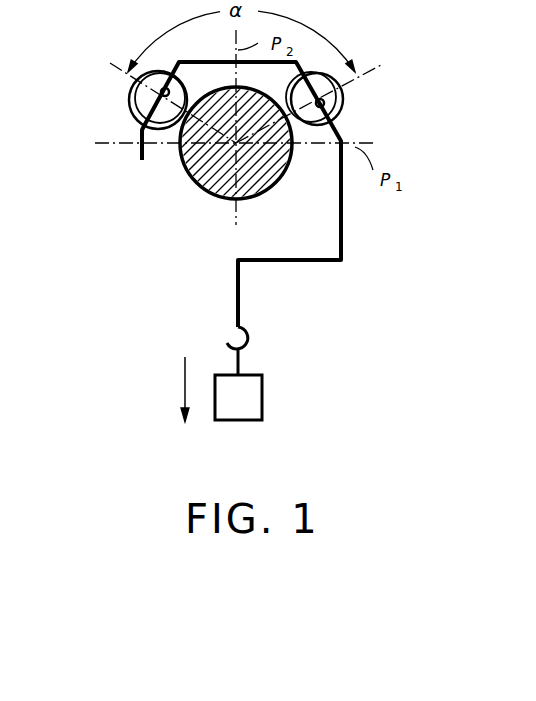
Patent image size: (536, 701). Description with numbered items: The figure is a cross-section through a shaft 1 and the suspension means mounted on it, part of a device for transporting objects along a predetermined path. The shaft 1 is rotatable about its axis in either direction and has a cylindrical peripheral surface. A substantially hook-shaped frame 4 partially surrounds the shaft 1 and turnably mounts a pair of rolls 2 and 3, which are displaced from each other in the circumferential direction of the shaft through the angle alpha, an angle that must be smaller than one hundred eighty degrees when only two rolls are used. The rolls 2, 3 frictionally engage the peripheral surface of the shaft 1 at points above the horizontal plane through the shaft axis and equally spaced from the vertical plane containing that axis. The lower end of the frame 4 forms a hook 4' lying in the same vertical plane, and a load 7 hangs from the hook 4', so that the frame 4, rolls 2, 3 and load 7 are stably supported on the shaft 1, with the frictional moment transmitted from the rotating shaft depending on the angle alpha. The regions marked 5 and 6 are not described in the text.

The shaft 1 is at (219, 198).
The roll 2 is at (145, 103).
The roll 3 is at (338, 98).
The frame 4 is at (262, 194).
The hook 4' is at (265, 346).
The left band portion 5 is at (178, 152).
The right band portion 6 is at (287, 152).
The load 7 is at (258, 398).